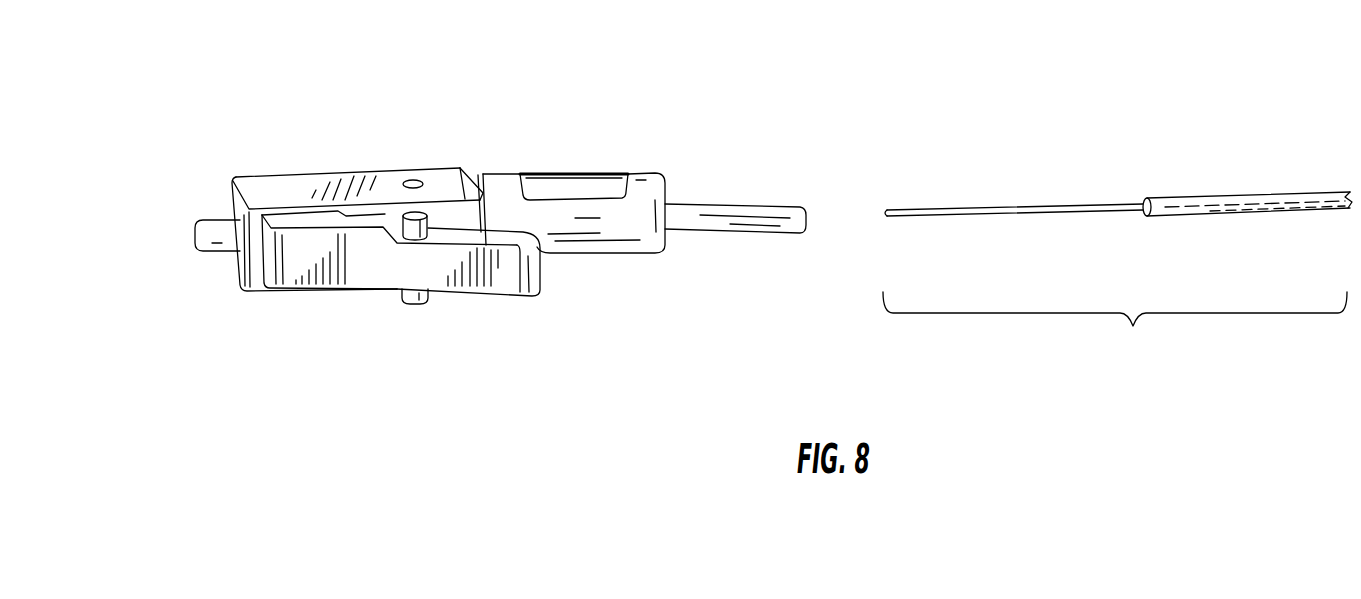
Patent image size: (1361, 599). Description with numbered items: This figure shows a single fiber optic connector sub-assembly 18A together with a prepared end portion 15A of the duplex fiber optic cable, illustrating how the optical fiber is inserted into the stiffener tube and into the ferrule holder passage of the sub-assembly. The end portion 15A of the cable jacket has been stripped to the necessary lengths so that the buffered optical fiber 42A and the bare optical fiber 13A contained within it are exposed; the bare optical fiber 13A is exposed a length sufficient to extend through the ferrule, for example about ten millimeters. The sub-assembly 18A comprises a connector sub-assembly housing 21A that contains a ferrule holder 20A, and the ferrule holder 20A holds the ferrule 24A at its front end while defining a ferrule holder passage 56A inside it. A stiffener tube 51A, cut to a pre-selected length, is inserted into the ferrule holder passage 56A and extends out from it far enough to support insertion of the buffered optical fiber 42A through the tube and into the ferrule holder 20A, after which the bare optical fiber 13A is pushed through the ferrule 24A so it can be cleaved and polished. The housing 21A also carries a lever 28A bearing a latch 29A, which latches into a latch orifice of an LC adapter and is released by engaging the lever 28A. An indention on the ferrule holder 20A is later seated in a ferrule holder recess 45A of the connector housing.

The bare optical fiber 13A is at (1050, 208).
The end portion 15A is at (1115, 331).
The fiber optic connector sub-assembly 18A is at (425, 132).
The ferrule holder 20A is at (493, 172).
The connector sub-assembly housing 21A is at (338, 174).
The ferrule 24A is at (207, 220).
The lever 28A is at (524, 298).
The latch 29A is at (420, 208).
The buffered optical fiber 42A is at (1281, 208).
The ferrule holder recess 45A is at (580, 188).
The stiffener tube 51A is at (750, 205).
The ferrule holder passage 56A is at (667, 187).